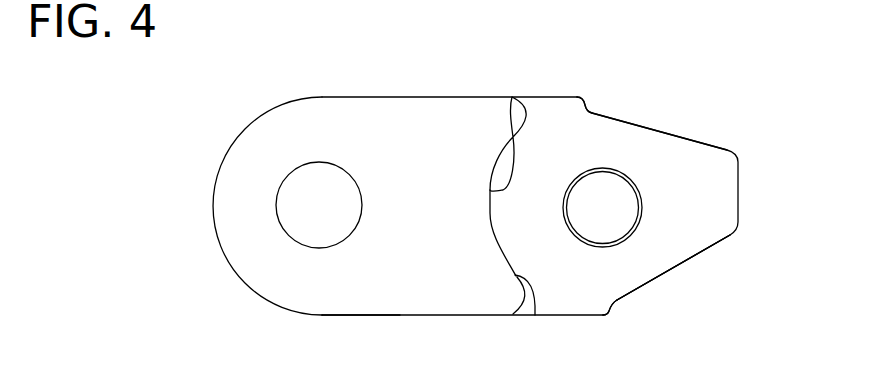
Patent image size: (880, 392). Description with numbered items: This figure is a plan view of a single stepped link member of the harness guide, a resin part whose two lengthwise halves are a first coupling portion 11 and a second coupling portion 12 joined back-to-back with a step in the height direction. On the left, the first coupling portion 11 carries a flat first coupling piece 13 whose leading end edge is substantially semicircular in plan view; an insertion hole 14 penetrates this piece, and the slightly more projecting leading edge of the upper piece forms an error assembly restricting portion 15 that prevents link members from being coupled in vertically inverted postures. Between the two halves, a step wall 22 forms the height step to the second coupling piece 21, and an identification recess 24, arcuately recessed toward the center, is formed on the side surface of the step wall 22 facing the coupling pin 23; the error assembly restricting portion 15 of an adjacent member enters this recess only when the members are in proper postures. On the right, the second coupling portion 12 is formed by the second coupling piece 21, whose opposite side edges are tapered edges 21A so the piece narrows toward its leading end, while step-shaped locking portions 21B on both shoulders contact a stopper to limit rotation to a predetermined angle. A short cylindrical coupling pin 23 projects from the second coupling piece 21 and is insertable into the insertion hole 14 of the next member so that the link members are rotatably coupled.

The first coupling portion 11 is at (417, 303).
The second coupling portion 12 is at (569, 305).
The first coupling piece 13 is at (325, 303).
The insertion hole 14 is at (318, 185).
The error assembly restricting portion 15 is at (225, 197).
The second coupling piece 21 is at (660, 248).
The tapered edge 21A is at (668, 132).
The locking portion 21B is at (589, 100).
The step wall 22 is at (535, 315).
The coupling pin 23 is at (608, 217).
The identification recess 24 is at (513, 150).